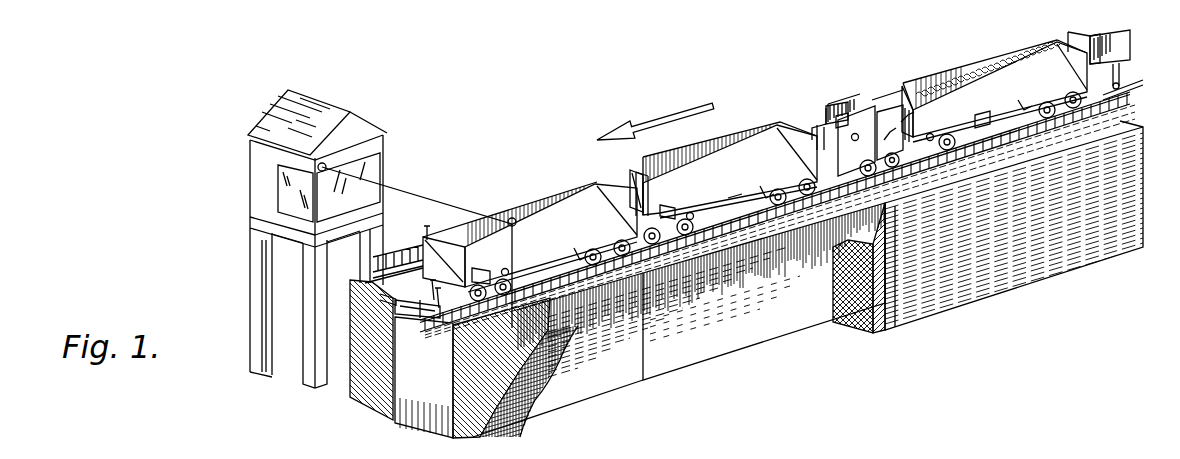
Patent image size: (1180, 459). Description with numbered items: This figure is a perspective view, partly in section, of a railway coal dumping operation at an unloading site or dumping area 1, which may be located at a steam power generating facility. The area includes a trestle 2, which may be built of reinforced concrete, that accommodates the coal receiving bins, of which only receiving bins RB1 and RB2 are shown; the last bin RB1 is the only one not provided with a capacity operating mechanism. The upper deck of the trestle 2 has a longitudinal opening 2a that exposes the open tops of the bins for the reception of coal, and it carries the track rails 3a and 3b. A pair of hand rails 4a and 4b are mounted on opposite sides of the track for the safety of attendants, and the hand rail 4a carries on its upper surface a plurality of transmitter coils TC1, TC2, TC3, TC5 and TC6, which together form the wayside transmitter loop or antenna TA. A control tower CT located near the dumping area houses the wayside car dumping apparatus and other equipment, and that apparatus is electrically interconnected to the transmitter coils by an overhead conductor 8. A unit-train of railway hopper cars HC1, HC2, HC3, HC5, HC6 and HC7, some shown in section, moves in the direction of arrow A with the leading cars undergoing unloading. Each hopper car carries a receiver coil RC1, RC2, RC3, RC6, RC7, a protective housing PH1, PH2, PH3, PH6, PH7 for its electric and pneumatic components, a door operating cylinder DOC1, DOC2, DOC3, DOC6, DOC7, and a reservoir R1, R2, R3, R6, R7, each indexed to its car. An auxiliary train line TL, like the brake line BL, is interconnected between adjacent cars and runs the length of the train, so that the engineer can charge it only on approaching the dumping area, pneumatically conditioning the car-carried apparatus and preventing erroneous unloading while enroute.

The control tower CT is at (268, 113).
The overhead conductor 8 is at (421, 197).
The hopper car HC1 is at (497, 212).
The hopper car HC2 is at (720, 143).
The hopper car HC3 is at (864, 117).
The hopper car HC5 is at (905, 98).
The hopper car HC6 is at (1000, 60).
The hopper car HC7 is at (1072, 36).
The protective housing PH1 is at (425, 235).
The protective housing PH2 is at (648, 170).
The protective housing PH3 is at (817, 125).
The protective housing PH6 is at (912, 102).
The protective housing PH7 is at (1120, 68).
The door operating cylinder DOC1 is at (423, 240).
The door operating cylinder DOC2 is at (630, 172).
The door operating cylinder DOC3 is at (826, 106).
The door operating cylinder DOC6 is at (913, 108).
The door operating cylinder DOC7 is at (1092, 42).
The receiver coil RC1 is at (478, 272).
The receiver coil RC2 is at (658, 212).
The receiver coil RC3 is at (842, 116).
The receiver coil RC6 is at (987, 104).
The receiver coil RC7 is at (1120, 92).
The reservoir R1 is at (505, 270).
The reservoir R2 is at (690, 214).
The reservoir R3 is at (855, 133).
The reservoir R6 is at (934, 135).
The reservoir R7 is at (1120, 86).
The transmitter coil TC1 is at (578, 258).
The transmitter coil TC2 is at (763, 192).
The transmitter coil TC3 is at (886, 138).
The transmitter coil TC5 is at (903, 120).
The transmitter coil TC6 is at (1024, 107).
The transmitter loop or antenna TA is at (735, 195).
The hand rail 4a is at (548, 278).
The hand rail 4b is at (360, 274).
The track rail 3a is at (440, 376).
The track rail 3b is at (380, 296).
The longitudinal opening 2a is at (399, 318).
The brake line BL is at (432, 282).
The train line TL is at (437, 292).
The receiving bin RB1 is at (612, 380).
The receiving bin RB2 is at (745, 335).
The unloading site or dumping area 1 is at (842, 340).
The trestle 2 is at (947, 302).
The arrow A is at (655, 118).